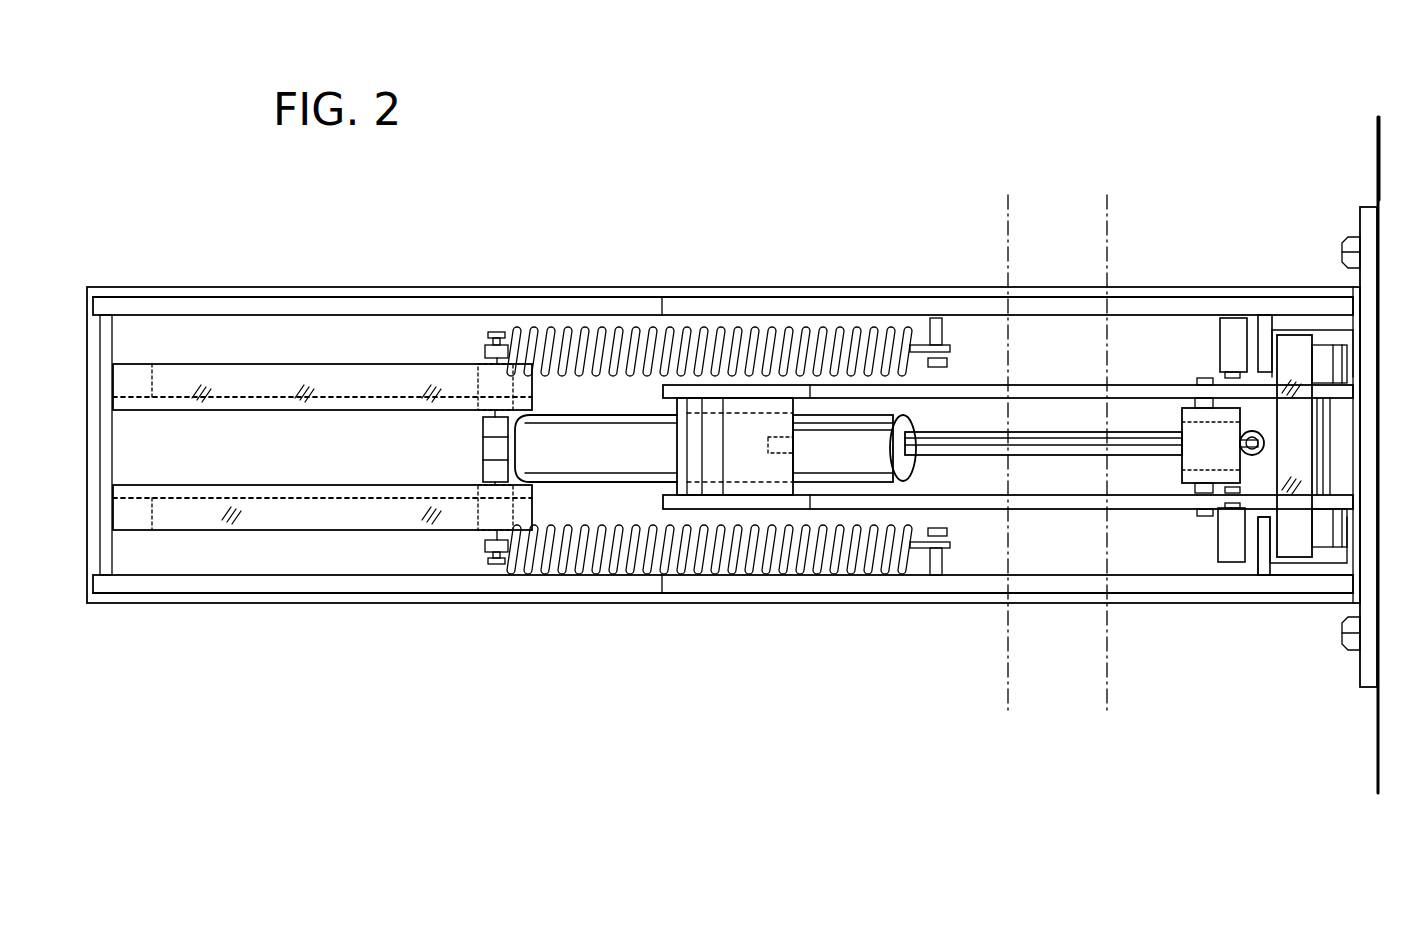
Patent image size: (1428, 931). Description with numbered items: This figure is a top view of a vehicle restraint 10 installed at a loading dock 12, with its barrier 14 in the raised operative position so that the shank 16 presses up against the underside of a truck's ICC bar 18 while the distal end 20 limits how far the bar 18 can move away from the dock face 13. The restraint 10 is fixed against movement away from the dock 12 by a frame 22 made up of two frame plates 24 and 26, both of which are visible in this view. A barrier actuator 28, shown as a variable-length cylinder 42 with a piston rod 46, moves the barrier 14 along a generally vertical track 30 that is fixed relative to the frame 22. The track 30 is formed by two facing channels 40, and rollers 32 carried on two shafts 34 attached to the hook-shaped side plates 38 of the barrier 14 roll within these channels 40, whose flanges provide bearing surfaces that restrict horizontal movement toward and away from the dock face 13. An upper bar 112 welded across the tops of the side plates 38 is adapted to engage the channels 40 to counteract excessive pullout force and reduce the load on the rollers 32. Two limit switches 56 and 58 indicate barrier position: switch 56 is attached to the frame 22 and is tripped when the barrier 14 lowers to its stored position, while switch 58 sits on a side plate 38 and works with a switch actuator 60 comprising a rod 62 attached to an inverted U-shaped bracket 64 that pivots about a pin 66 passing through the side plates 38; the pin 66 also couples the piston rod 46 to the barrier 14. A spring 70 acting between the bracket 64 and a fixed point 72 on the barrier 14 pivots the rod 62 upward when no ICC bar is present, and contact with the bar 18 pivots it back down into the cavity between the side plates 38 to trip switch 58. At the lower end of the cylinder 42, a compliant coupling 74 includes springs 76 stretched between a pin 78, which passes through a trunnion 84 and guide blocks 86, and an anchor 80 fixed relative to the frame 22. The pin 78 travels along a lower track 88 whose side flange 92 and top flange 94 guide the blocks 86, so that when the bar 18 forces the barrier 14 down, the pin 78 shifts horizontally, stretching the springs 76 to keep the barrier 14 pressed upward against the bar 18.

The vehicle restraint 10 is at (857, 200).
The loading dock 12 is at (1372, 708).
The dock face 13 is at (1375, 148).
The barrier 14 is at (665, 388).
The shank 16 is at (723, 445).
The ICC bar 18 is at (1107, 245).
The distal end 20 is at (835, 500).
The frame 22 is at (1358, 222).
The frame plate 24 is at (292, 597).
The frame plate 26 is at (230, 288).
The barrier actuator 28 is at (978, 428).
The track 30 is at (1298, 577).
The rollers 32 is at (1370, 548).
The shafts 34 is at (1328, 413).
The side plates 38 is at (1022, 383).
The channels 40 is at (1362, 340).
The cylinder 42 is at (608, 482).
The piston rod 46 is at (978, 465).
The limit switch 56 is at (1225, 577).
The limit switch 58 is at (1222, 332).
The switch actuator 60 is at (1075, 455).
The rod 62 is at (1027, 438).
The inverted U-shaped bracket 64 is at (1182, 415).
The pin 66 is at (1205, 507).
The spring 70 is at (1262, 440).
The fixed point 72 is at (995, 410).
The compliant coupling 74 is at (592, 330).
The springs 76 is at (797, 330).
The pin 78 is at (497, 330).
The anchor 80 is at (953, 575).
The trunnion 84 is at (483, 430).
The guide blocks 86 is at (478, 375).
The lower track 88 is at (250, 365).
The side flange 92 is at (352, 397).
The top flange 94 is at (175, 370).
The upper bar 112 is at (1322, 533).